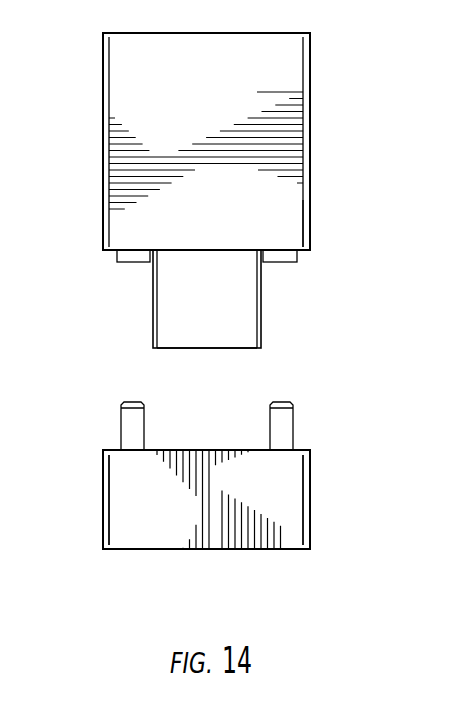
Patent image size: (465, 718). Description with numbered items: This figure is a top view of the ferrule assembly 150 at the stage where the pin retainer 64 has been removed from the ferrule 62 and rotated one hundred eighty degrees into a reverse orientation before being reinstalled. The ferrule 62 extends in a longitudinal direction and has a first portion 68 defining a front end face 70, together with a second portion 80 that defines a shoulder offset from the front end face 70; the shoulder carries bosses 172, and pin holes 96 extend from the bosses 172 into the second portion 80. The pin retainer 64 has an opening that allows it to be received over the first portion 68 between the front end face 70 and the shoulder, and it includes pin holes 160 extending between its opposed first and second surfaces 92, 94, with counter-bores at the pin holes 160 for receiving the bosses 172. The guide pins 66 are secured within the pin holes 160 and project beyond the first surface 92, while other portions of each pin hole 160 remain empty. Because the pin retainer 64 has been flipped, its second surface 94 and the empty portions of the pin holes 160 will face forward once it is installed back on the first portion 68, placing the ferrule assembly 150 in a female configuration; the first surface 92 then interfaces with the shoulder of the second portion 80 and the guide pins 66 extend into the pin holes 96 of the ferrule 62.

The ferrule 62 is at (86, 131).
The pin holes 96 is at (297, 100).
The second portion 80 is at (298, 211).
The ferrule assembly 150 is at (338, 220).
The bosses 172 is at (137, 262).
The first portion 68 is at (261, 325).
The front end face 70 is at (170, 349).
The pin retainer 64 is at (80, 516).
The guide pins 66 is at (120, 430).
The first surface 92 is at (185, 452).
The pin holes 160 is at (117, 519).
The second surface 94 is at (181, 549).